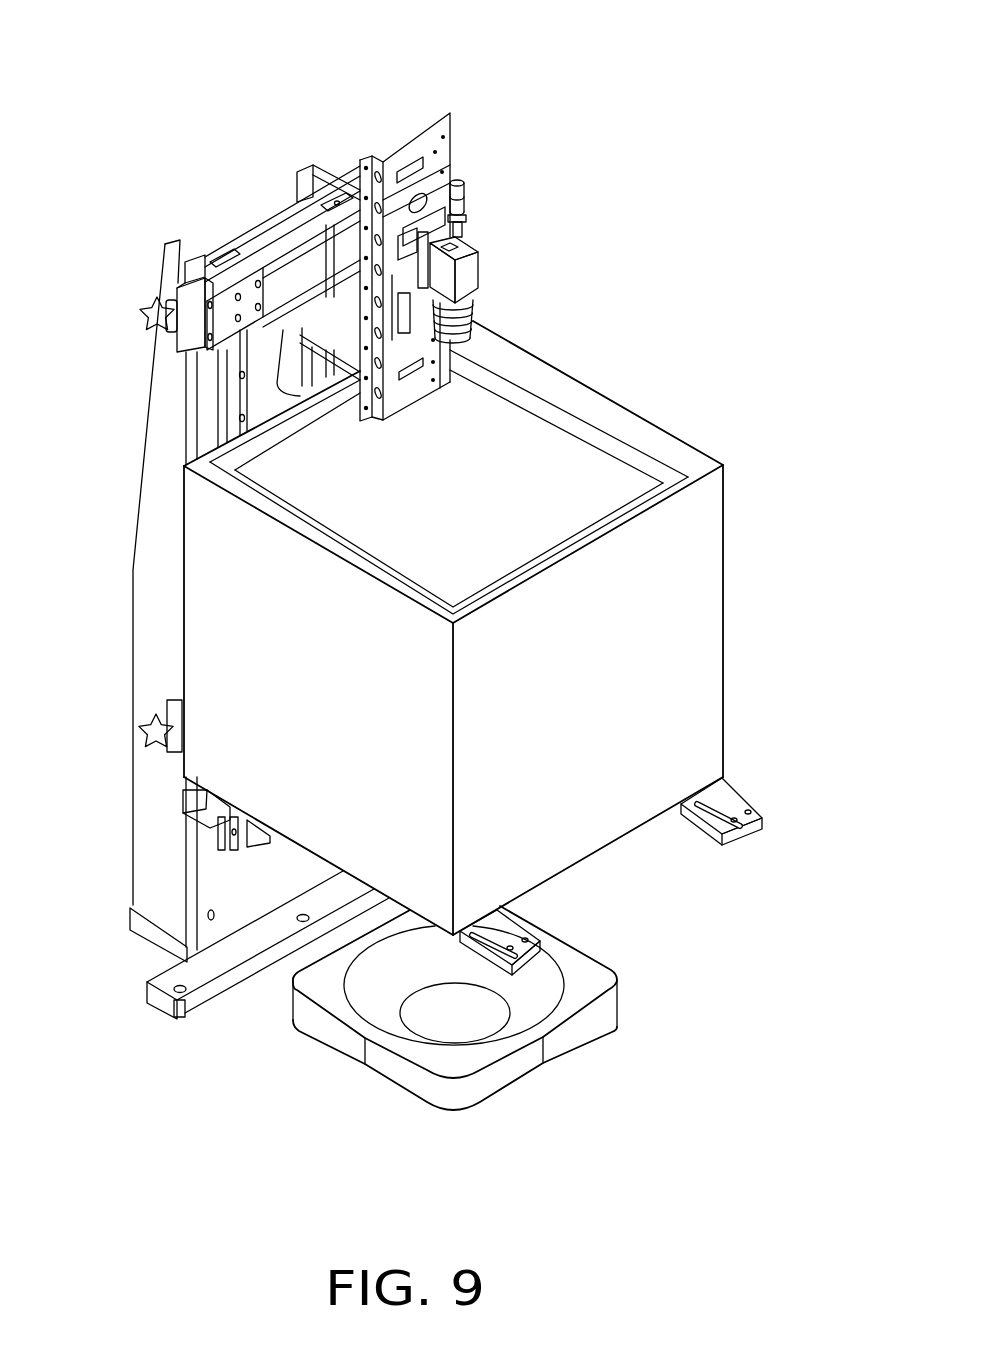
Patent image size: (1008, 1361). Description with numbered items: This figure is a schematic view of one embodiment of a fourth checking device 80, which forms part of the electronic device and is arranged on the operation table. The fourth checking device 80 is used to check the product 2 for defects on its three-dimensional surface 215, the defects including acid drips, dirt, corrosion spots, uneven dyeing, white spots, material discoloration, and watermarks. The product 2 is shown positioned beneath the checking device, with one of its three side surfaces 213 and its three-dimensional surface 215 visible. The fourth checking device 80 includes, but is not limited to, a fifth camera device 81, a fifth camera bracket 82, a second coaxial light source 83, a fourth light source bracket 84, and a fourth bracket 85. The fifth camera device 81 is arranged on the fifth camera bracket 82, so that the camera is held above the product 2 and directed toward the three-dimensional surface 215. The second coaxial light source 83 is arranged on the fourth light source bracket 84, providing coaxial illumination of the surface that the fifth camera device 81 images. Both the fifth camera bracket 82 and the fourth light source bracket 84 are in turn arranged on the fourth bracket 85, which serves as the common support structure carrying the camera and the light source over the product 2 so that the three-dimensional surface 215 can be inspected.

The fourth checking device 80 is at (278, 52).
The fifth camera device 81 is at (470, 268).
The fifth camera bracket 82 is at (466, 188).
The second coaxial light source 83 is at (700, 608).
The fourth light source bracket 84 is at (740, 798).
The fourth bracket 85 is at (177, 272).
The product 2 is at (632, 1050).
The side surface 213 is at (495, 1078).
The 3D surface 215 is at (568, 972).